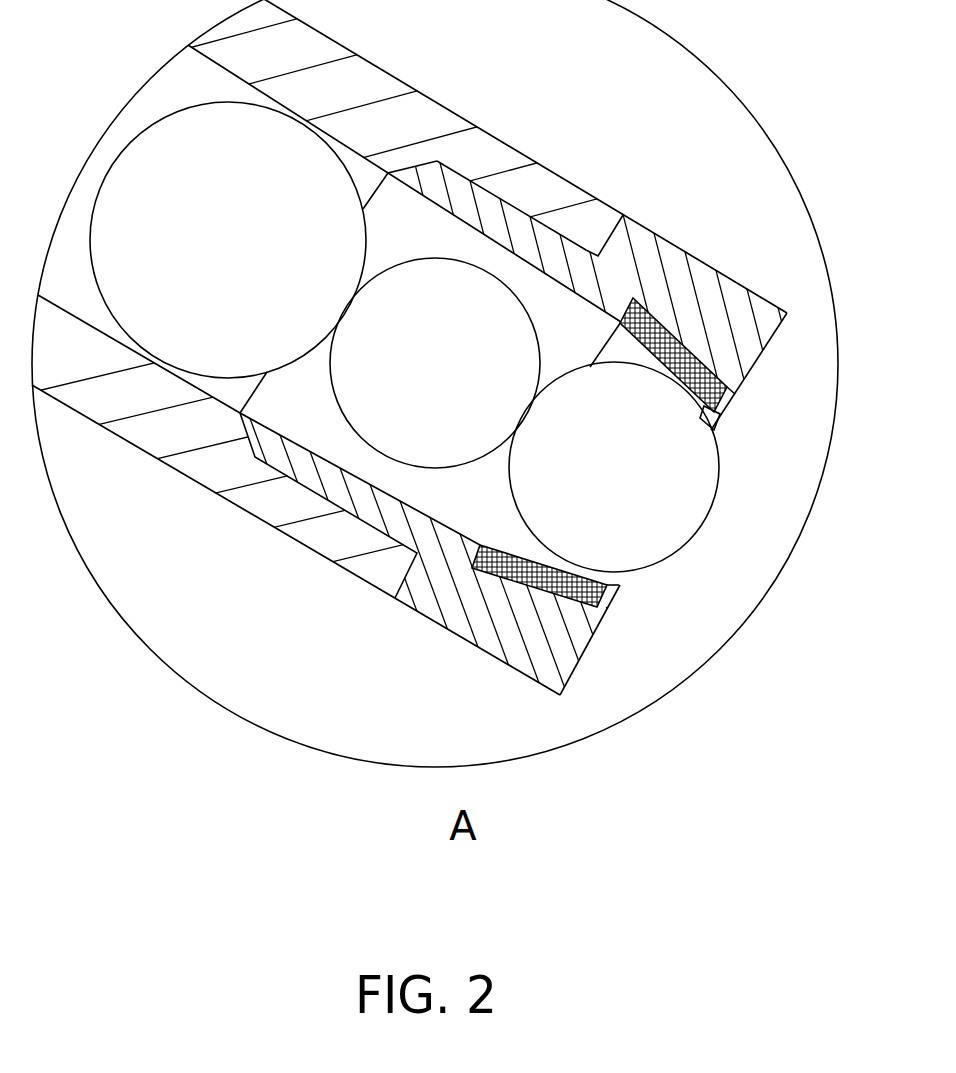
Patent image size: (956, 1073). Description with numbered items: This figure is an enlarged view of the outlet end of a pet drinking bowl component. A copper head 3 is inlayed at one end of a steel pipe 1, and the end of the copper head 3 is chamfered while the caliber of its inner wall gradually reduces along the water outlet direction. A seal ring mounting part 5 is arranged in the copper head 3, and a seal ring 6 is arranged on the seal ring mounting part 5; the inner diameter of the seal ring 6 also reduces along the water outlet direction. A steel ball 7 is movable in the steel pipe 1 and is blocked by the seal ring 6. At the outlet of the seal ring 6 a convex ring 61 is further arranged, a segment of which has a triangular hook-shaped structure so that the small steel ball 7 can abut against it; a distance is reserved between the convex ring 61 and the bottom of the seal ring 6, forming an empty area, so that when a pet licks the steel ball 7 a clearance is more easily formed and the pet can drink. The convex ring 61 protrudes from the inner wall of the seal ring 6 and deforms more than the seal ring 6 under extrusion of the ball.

The steel pipe 1 is at (420, 110).
The copper head 3 is at (643, 243).
The seal ring mounting part 5 is at (572, 613).
The seal ring 6 is at (700, 377).
The convex ring 61 is at (735, 418).
The steel ball 7 is at (663, 512).